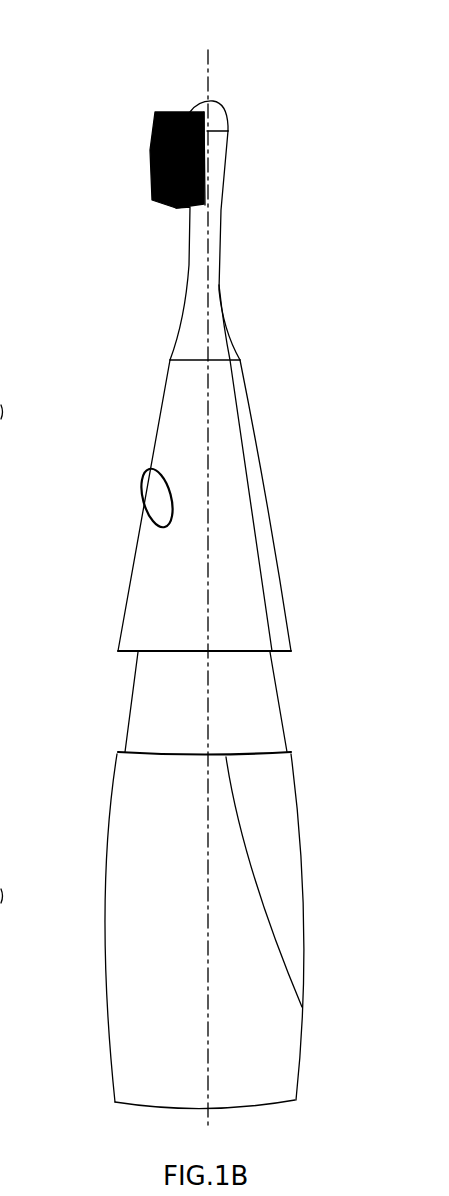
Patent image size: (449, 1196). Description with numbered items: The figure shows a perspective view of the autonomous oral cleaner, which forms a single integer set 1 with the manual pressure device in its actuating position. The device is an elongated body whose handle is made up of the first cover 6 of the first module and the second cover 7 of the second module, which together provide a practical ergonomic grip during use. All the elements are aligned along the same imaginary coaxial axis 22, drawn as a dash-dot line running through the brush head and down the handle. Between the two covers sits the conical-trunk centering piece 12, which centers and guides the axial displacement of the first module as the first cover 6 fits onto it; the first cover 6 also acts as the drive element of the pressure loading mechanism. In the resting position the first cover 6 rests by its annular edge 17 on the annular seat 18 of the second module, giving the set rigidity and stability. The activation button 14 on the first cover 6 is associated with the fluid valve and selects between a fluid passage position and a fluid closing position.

The single integer set 1 is at (104, 144).
The first cover 6 is at (147, 593).
The second cover 7 is at (134, 943).
The conical-trunk centering piece 12 is at (253, 707).
The activation button 14 is at (154, 505).
The annular edge 17 is at (127, 653).
The annular seat 18 is at (118, 750).
The imaginary coaxial axis 22 is at (209, 80).